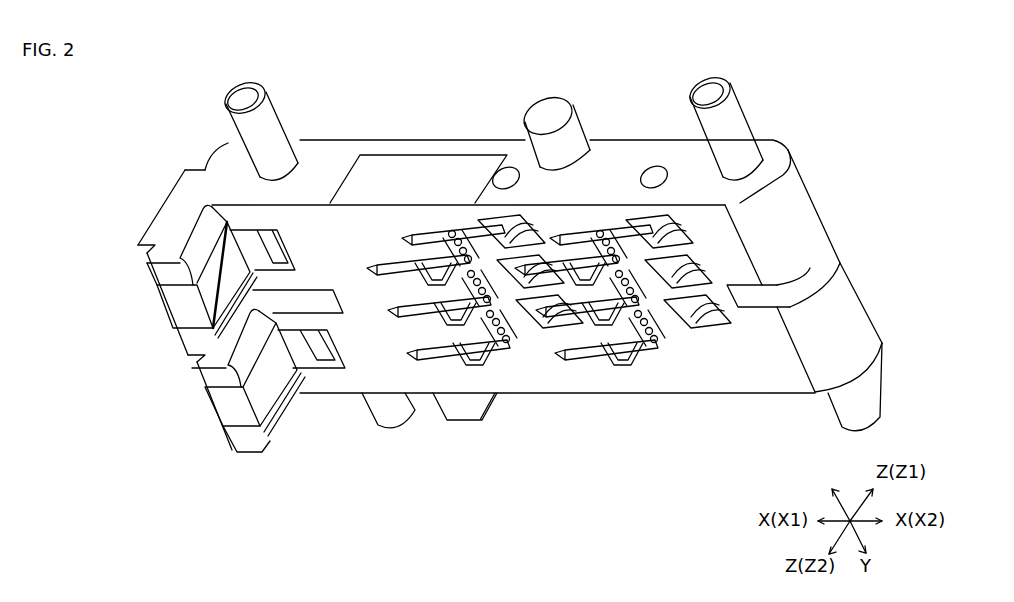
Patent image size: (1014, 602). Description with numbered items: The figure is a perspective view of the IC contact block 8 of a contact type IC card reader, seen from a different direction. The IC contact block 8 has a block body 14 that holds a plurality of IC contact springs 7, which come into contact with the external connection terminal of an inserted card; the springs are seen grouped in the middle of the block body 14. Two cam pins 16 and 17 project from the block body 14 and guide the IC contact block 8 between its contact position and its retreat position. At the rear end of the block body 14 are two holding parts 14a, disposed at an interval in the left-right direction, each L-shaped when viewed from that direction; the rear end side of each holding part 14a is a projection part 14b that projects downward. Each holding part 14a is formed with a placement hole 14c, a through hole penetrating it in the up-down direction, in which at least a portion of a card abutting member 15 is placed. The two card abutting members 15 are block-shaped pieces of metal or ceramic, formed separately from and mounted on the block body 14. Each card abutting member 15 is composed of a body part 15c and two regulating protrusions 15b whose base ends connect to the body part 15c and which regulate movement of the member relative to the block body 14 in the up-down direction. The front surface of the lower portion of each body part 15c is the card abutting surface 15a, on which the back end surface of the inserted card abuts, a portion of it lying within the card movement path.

The IC contact spring 7 is at (420, 272).
The IC contact block 8 is at (510, 260).
The block body 14 is at (434, 140).
The holding part 14a is at (244, 298).
The projection part 14b is at (150, 245).
The placement hole 14c is at (284, 260).
The card abutting member 15 is at (220, 342).
The card abutting surface 15a is at (235, 280).
The regulating protrusion 15b is at (170, 310).
The body part 15c is at (218, 245).
The cam pin 16 is at (240, 84).
The cam pin 17 is at (702, 80).